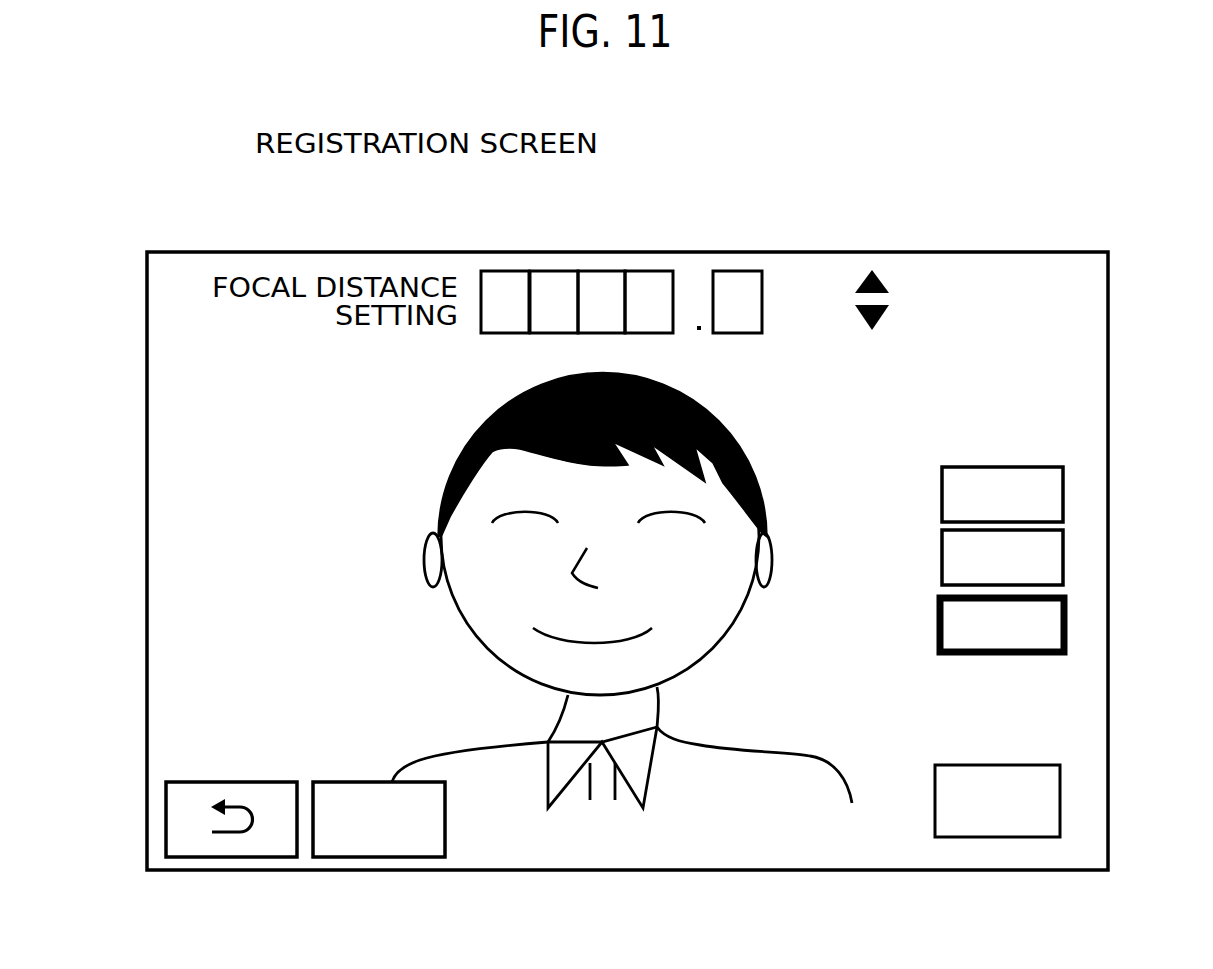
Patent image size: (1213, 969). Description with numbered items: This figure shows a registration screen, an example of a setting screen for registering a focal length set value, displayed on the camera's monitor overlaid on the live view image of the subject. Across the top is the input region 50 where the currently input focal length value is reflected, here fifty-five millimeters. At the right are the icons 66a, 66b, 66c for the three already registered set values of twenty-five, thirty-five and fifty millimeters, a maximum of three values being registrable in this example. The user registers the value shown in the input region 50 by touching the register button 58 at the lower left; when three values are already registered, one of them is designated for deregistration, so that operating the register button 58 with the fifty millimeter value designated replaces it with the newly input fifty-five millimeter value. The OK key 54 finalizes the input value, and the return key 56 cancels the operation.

The input region 50 is at (597, 270).
The OK key 54 is at (1018, 765).
The return key 56 is at (220, 782).
The register button 58 is at (352, 782).
The icon 66a is at (1065, 498).
The icon 66b is at (1065, 561).
The icon 66c is at (1068, 630).